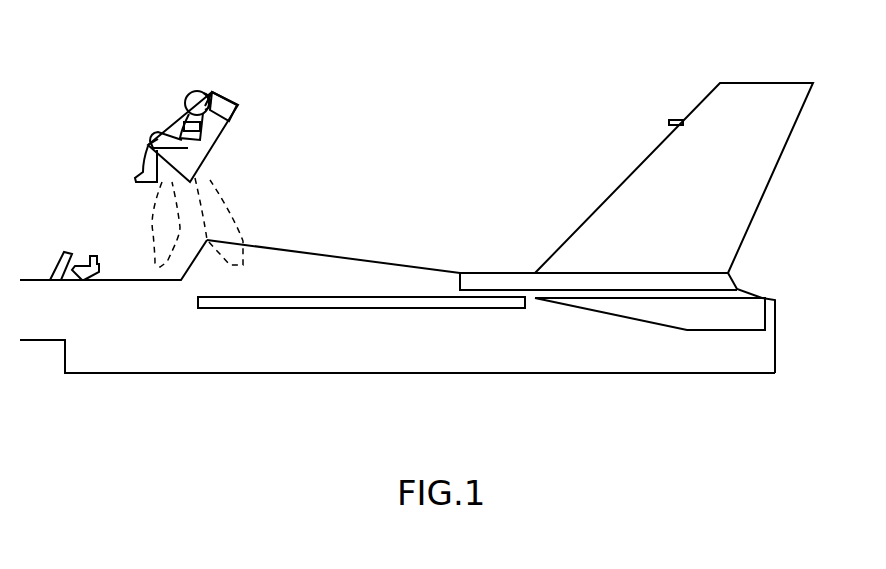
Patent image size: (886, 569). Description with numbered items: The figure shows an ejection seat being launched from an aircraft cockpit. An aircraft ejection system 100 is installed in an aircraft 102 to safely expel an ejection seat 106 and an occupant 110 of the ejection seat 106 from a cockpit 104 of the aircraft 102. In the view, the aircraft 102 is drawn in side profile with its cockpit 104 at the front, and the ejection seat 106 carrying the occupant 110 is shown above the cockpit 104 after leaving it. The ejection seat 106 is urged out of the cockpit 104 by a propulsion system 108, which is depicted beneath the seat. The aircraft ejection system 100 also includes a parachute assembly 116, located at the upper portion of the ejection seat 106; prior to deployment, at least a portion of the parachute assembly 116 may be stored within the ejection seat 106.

The aircraft ejection system 100 is at (318, 160).
The aircraft 102 is at (425, 345).
The cockpit 104 is at (115, 267).
The ejection seat 106 is at (192, 157).
The propulsion system 108 is at (212, 202).
The occupant 110 is at (188, 92).
The parachute assembly 116 is at (215, 97).